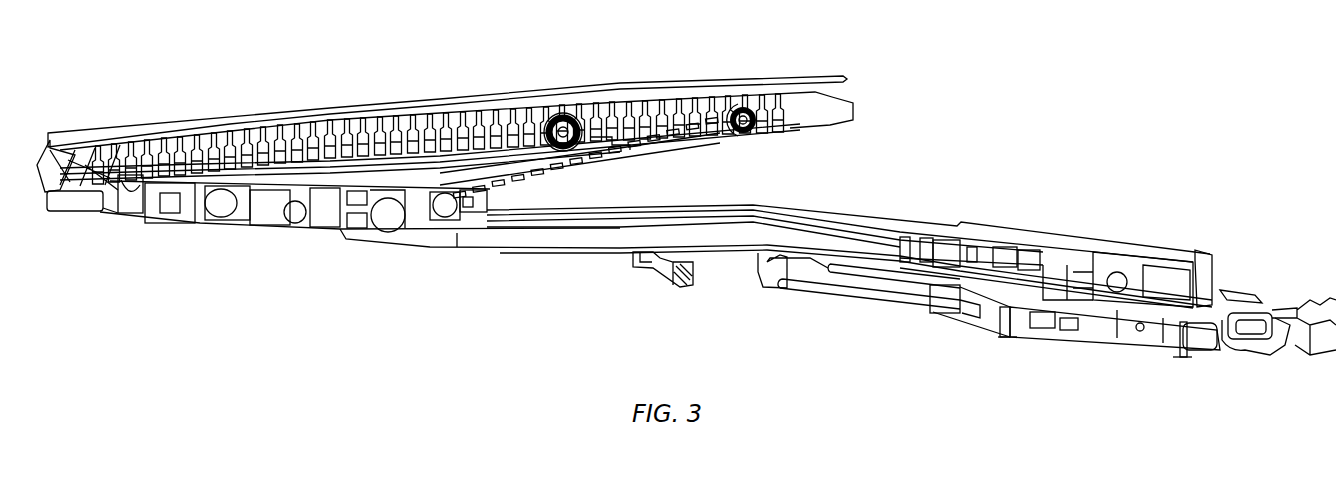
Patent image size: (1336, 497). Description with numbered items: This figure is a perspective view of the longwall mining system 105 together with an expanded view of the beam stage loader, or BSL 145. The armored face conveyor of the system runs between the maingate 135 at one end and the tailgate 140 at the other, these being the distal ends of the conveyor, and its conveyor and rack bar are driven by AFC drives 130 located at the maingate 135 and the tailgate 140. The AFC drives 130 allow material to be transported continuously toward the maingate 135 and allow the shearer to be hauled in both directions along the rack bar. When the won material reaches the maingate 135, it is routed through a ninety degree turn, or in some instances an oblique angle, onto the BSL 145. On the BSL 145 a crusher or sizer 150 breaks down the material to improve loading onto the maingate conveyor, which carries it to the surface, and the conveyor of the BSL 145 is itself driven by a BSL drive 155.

The longwall mining system 105 is at (1000, 50).
The tailgate 140 is at (852, 79).
The maingate 135 is at (68, 230).
The AFC drives 130 is at (140, 224).
The crusher or sizer 150 is at (385, 212).
The BSL 145 is at (841, 329).
The BSL drive 155 is at (1130, 340).